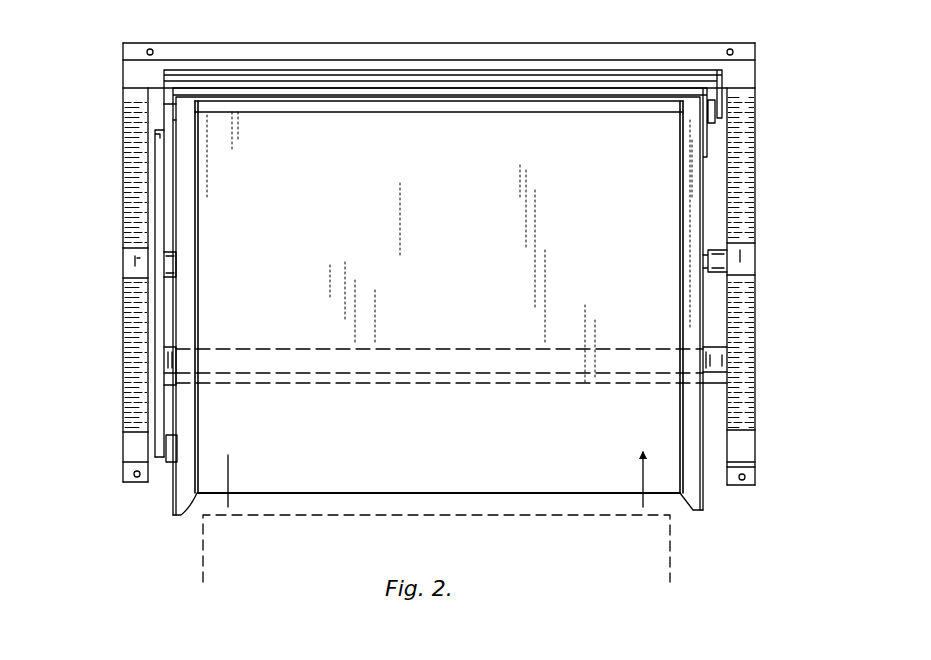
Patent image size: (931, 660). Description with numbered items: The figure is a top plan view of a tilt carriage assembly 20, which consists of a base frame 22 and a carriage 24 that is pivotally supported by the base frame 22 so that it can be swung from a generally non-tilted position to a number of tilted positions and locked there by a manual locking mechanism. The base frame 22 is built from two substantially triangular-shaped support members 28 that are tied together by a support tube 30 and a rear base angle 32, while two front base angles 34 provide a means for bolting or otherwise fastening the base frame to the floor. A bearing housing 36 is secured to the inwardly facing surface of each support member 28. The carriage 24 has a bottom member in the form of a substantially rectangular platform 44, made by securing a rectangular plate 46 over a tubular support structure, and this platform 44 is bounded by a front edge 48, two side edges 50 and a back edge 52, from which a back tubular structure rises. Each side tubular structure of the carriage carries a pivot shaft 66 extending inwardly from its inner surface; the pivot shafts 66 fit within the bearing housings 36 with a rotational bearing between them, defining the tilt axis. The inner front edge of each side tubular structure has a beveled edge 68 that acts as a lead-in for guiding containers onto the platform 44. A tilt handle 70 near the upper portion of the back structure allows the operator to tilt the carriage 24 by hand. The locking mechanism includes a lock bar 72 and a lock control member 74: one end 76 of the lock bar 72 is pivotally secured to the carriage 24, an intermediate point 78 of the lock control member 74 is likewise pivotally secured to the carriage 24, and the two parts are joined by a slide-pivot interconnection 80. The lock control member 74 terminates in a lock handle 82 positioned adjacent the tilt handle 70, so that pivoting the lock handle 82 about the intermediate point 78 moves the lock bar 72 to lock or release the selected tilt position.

The tilt carriage assembly 20 is at (783, 60).
The base frame 22 is at (755, 191).
The carriage 24 is at (703, 497).
The support member 28 is at (134, 262).
The support tube 30 is at (718, 362).
The rear base angle 32 is at (668, 46).
The front base angle 34 is at (123, 483).
The bearing housing 36 is at (720, 268).
The platform 44 is at (676, 507).
The rectangular plate 46 is at (478, 172).
The front edge 48 is at (346, 491).
The side edge 50 is at (203, 292).
The back edge 52 is at (385, 113).
The pivot shaft 66 is at (706, 262).
The beveled edge 68 is at (190, 511).
The tilt handle 70 is at (437, 91).
The lock bar 72 is at (168, 318).
The lock control member 74 is at (168, 122).
The end 76 is at (160, 447).
The intermediate point 78 is at (170, 109).
The slide-pivot interconnection 80 is at (160, 135).
The lock handle 82 is at (273, 72).